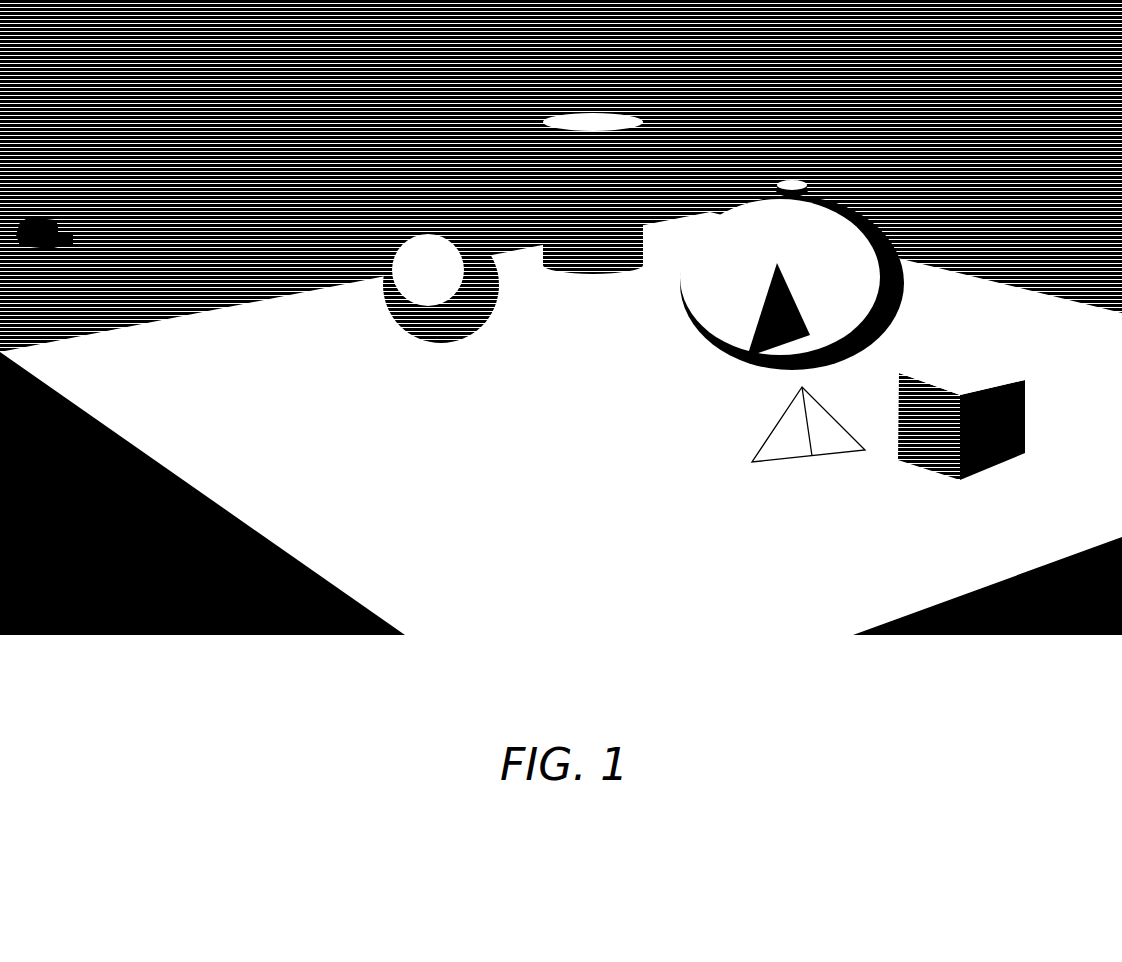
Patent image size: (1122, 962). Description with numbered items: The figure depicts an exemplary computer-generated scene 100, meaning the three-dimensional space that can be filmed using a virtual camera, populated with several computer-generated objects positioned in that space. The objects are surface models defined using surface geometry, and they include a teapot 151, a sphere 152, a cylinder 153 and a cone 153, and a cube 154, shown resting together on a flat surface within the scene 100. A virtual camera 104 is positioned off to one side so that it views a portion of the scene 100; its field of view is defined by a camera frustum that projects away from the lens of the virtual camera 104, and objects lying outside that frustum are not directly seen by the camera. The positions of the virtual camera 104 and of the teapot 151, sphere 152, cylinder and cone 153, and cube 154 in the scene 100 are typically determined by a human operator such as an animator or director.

The scene 100 is at (272, 59).
The virtual camera 104 is at (37, 213).
The teapot 151 is at (797, 175).
The sphere 152 is at (437, 222).
The cylinder and cone 153 is at (600, 108).
The cube 154 is at (985, 356).